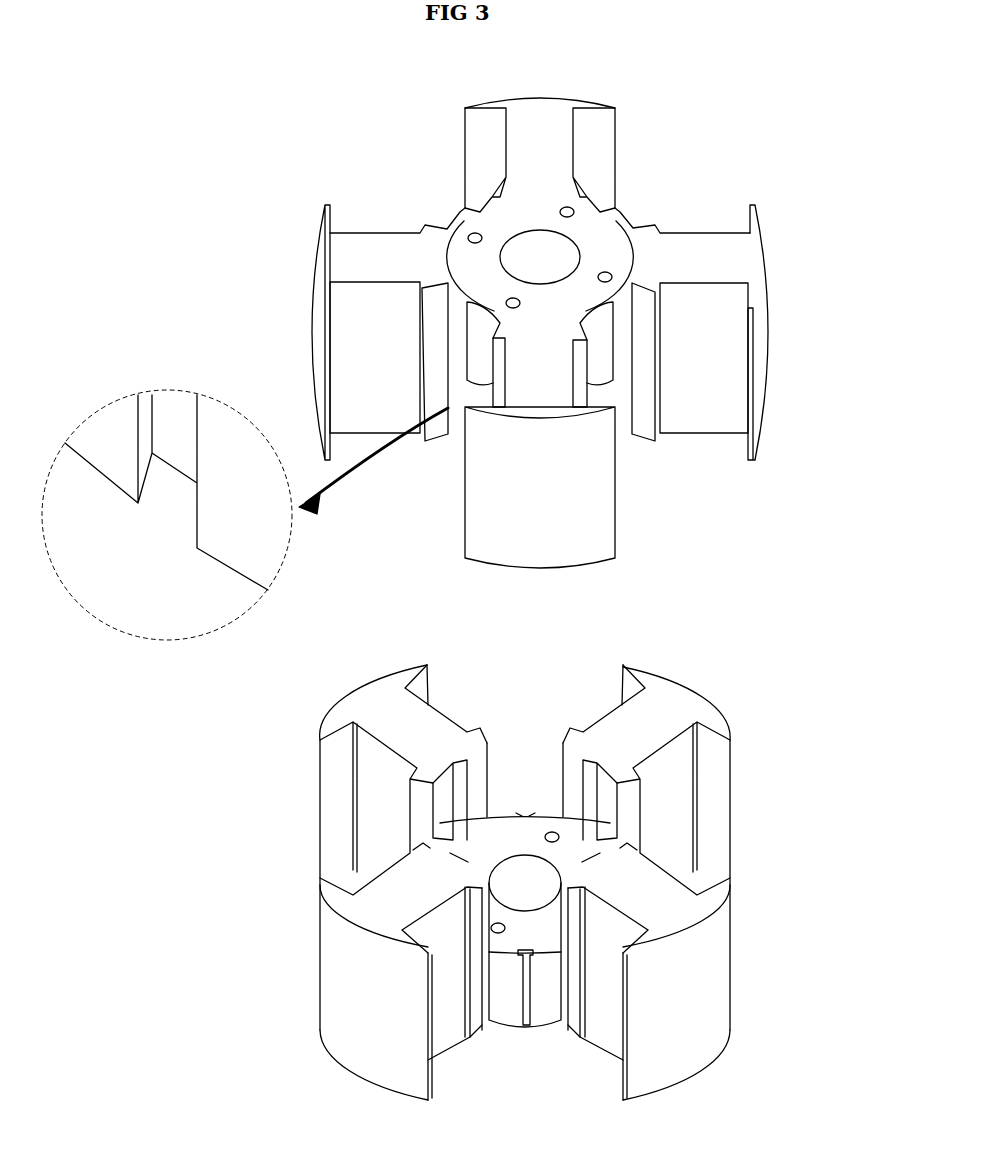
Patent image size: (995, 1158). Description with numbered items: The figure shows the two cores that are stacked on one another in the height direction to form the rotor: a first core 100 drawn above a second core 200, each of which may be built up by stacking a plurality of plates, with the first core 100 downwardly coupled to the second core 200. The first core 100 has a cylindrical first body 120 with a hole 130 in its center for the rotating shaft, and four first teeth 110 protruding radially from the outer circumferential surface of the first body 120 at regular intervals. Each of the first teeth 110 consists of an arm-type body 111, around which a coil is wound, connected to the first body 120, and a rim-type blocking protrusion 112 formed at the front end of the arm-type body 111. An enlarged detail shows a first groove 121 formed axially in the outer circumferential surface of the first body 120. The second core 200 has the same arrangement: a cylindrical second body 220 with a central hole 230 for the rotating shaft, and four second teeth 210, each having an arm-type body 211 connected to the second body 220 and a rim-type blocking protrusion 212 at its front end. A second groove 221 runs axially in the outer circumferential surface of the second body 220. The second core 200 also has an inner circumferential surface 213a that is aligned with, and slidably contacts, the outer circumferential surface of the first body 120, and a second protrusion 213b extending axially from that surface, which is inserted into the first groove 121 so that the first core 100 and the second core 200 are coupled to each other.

The first core 100 is at (585, 319).
The first teeth 110 is at (766, 239).
The arm-type body 111 is at (693, 412).
The rim-type blocking protrusion 112 is at (766, 445).
The first body 120 is at (592, 232).
The first groove 121 is at (172, 415).
The hole 130 is at (518, 232).
The second core 200 is at (579, 859).
The second teeth 210 is at (675, 1045).
The arm-type body 211 is at (613, 730).
The rim-type blocking protrusion 212 is at (672, 683).
The inner circumferential surface 213a is at (607, 797).
The second protrusion 213b is at (593, 778).
The second body 220 is at (540, 928).
The second groove 221 is at (513, 1020).
The hole 230 is at (548, 868).